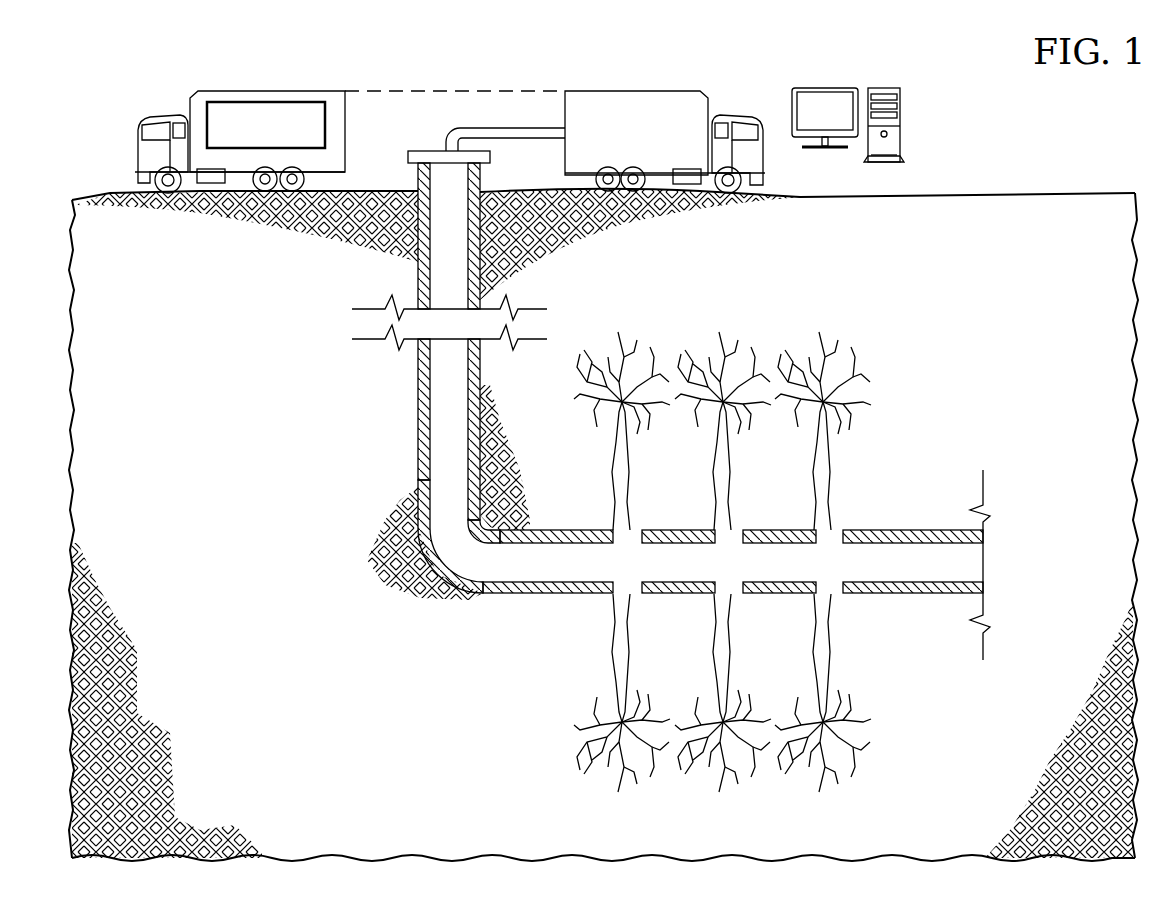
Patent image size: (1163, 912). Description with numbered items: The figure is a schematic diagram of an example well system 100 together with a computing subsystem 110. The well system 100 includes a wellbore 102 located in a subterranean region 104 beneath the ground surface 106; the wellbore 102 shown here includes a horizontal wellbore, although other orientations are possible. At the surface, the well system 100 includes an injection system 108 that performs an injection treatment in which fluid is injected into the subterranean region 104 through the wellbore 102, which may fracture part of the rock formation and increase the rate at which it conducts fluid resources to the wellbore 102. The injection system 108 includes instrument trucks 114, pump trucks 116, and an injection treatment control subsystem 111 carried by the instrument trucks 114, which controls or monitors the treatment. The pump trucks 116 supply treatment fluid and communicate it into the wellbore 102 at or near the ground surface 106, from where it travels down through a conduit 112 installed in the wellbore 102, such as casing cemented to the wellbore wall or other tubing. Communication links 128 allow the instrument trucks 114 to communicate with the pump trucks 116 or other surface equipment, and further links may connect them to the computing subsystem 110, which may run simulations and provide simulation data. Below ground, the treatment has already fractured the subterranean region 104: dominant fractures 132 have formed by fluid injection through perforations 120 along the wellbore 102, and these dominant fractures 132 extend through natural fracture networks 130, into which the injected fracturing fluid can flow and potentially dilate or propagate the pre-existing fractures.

The well system 100 is at (298, 640).
The wellbore 102 is at (541, 598).
The subterranean region 104 is at (608, 283).
The ground surface 106 is at (935, 196).
The injection system 108 is at (413, 117).
The computing subsystem 110 is at (869, 77).
The injection treatment control subsystem 111 is at (288, 138).
The conduit 112 is at (418, 432).
The instrument trucks 114 is at (240, 117).
The pump trucks 116 is at (632, 90).
The perforations 120 is at (631, 529).
The communication links 128 is at (437, 90).
The natural fracture networks 130 is at (742, 546).
The dominant fractures 132 is at (632, 453).